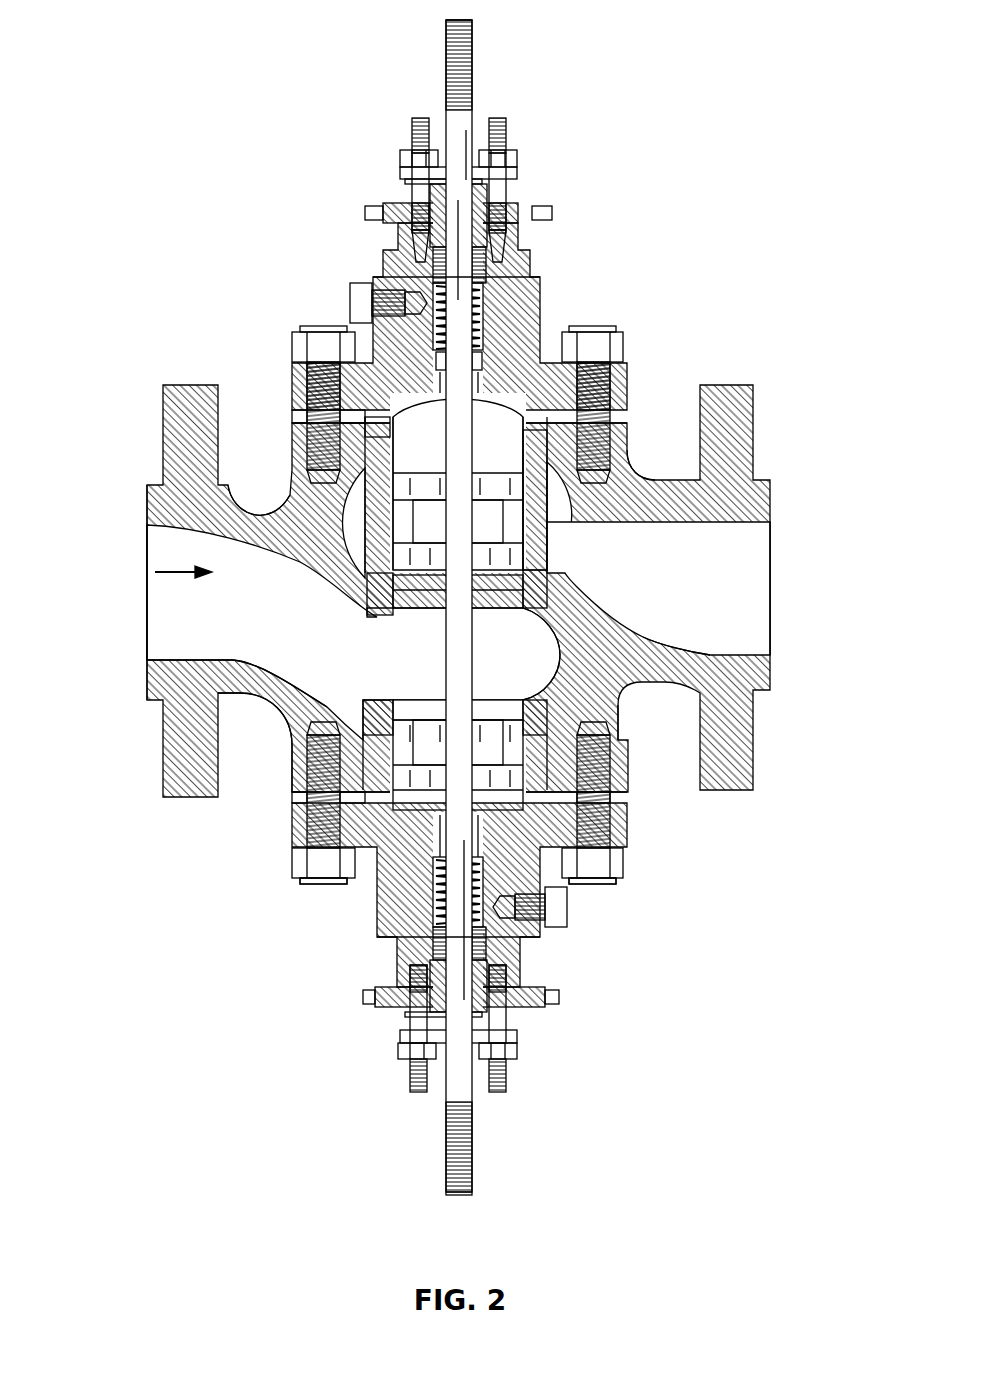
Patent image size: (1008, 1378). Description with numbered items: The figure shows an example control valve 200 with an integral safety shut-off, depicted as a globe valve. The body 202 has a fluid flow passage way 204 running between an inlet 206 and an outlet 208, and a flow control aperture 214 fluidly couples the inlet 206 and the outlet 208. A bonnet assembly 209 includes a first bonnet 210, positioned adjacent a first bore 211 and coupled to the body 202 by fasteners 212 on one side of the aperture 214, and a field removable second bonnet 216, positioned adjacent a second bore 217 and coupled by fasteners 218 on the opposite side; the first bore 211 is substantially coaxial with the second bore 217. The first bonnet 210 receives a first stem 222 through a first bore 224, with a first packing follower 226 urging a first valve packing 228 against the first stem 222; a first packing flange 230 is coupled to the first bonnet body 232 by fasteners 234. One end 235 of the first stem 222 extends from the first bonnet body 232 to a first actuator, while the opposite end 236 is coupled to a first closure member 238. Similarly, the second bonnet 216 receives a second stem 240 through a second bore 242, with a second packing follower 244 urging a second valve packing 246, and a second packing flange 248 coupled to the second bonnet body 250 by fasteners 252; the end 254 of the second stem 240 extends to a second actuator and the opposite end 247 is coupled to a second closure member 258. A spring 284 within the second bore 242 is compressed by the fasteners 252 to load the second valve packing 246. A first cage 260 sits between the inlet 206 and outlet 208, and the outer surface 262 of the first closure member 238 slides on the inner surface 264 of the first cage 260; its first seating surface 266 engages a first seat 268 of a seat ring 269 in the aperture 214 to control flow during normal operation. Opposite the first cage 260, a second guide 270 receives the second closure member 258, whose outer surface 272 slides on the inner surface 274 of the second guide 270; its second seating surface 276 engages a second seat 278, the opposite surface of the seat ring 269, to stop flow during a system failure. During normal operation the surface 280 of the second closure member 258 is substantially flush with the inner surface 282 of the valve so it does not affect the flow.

The control valve 200 is at (160, 54).
The body 202 is at (722, 385).
The fluid flow passage way 204 is at (226, 603).
The inlet 206 is at (150, 552).
The outlet 208 is at (770, 532).
The bonnet assembly 209 is at (635, 225).
The first bonnet 210 is at (530, 275).
The first bore 211 is at (560, 430).
The fasteners 212 is at (320, 330).
The flow control aperture 214 is at (497, 660).
The second bonnet 216 is at (300, 860).
The second bore 217 is at (618, 705).
The fasteners 218 is at (305, 900).
The first stem 222 is at (445, 80).
The first bore 224 is at (480, 300).
The first packing follower 226 is at (415, 200).
The first valve packing 228 is at (405, 268).
The first packing flange 230 is at (400, 172).
The first bonnet body 232 is at (300, 395).
The fasteners 234 is at (415, 118).
The end 235 is at (450, 22).
The opposite end 236 is at (585, 400).
The first closure member 238 is at (600, 520).
The second stem 240 is at (420, 975).
The second bore 242 is at (440, 945).
The second packing follower 244 is at (510, 1000).
The second valve packing 246 is at (490, 945).
The opposite end 247 is at (590, 800).
The second packing flange 248 is at (510, 1040).
The second bonnet body 250 is at (630, 830).
The fasteners 252 is at (418, 1095).
The end 254 is at (455, 1192).
The second closure member 258 is at (345, 760).
The first cage 260 is at (370, 460).
The outer surface 262 is at (365, 490).
The inner surface 264 is at (555, 445).
The first seating surface 266 is at (335, 515).
The first seat 268 is at (380, 615).
The seat ring 269 is at (505, 590).
The second guide 270 is at (540, 780).
The outer surface 272 is at (520, 730).
The inner surface 274 is at (320, 833).
The second seating surface 276 is at (677, 647).
The second seat 278 is at (387, 618).
The surface 280 is at (440, 677).
The inner surface 282 is at (330, 780).
The spring 284 is at (440, 880).